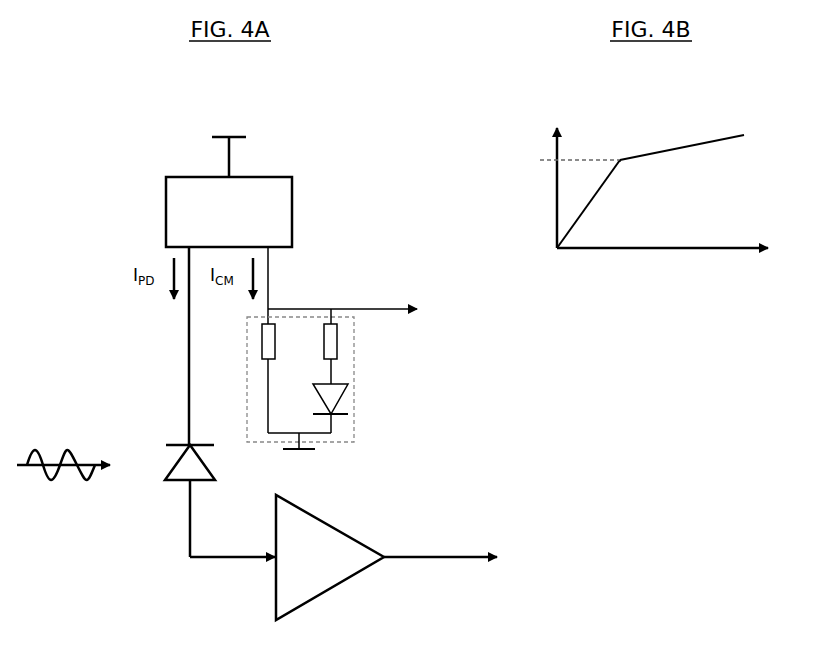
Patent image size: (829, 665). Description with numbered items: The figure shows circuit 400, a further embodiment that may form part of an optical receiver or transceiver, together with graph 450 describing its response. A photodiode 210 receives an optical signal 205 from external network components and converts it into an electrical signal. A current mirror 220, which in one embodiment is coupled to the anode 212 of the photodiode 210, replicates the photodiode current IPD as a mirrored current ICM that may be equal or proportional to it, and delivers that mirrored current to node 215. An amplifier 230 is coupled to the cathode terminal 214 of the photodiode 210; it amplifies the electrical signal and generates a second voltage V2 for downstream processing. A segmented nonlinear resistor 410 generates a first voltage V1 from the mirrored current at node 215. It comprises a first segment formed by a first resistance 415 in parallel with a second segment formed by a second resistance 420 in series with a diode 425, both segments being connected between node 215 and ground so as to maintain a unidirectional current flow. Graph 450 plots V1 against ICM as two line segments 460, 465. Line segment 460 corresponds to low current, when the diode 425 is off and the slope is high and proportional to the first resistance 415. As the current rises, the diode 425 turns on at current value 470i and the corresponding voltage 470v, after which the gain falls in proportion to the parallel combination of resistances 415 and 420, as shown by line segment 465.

In FIG. 4A, the circuit 400 is at (154, 98).
In FIG. 4A, the current mirror 220 is at (165, 198).
In FIG. 4A, the node 215 is at (390, 305).
In FIG. 4A, the segmented nonlinear resistor 410 is at (247, 393).
In FIG. 4A, the first resistance 415 is at (276, 356).
In FIG. 4A, the second resistance 420 is at (339, 351).
In FIG. 4A, the diode 425 is at (350, 400).
In FIG. 4A, the anode 212 is at (168, 442).
In FIG. 4A, the photodiode 210 is at (210, 468).
In FIG. 4A, the cathode terminal 214 is at (186, 487).
In FIG. 4A, the optical signal 205 is at (64, 482).
In FIG. 4A, the amplifier 230 is at (344, 528).
In FIG. 4B, the graph 450 is at (666, 92).
In FIG. 4B, the line segment 460 is at (601, 174).
In FIG. 4B, the line segment 465 is at (731, 145).
In FIG. 4B, the voltage 470v is at (556, 160).
In FIG. 4B, the current value 470i is at (621, 224).